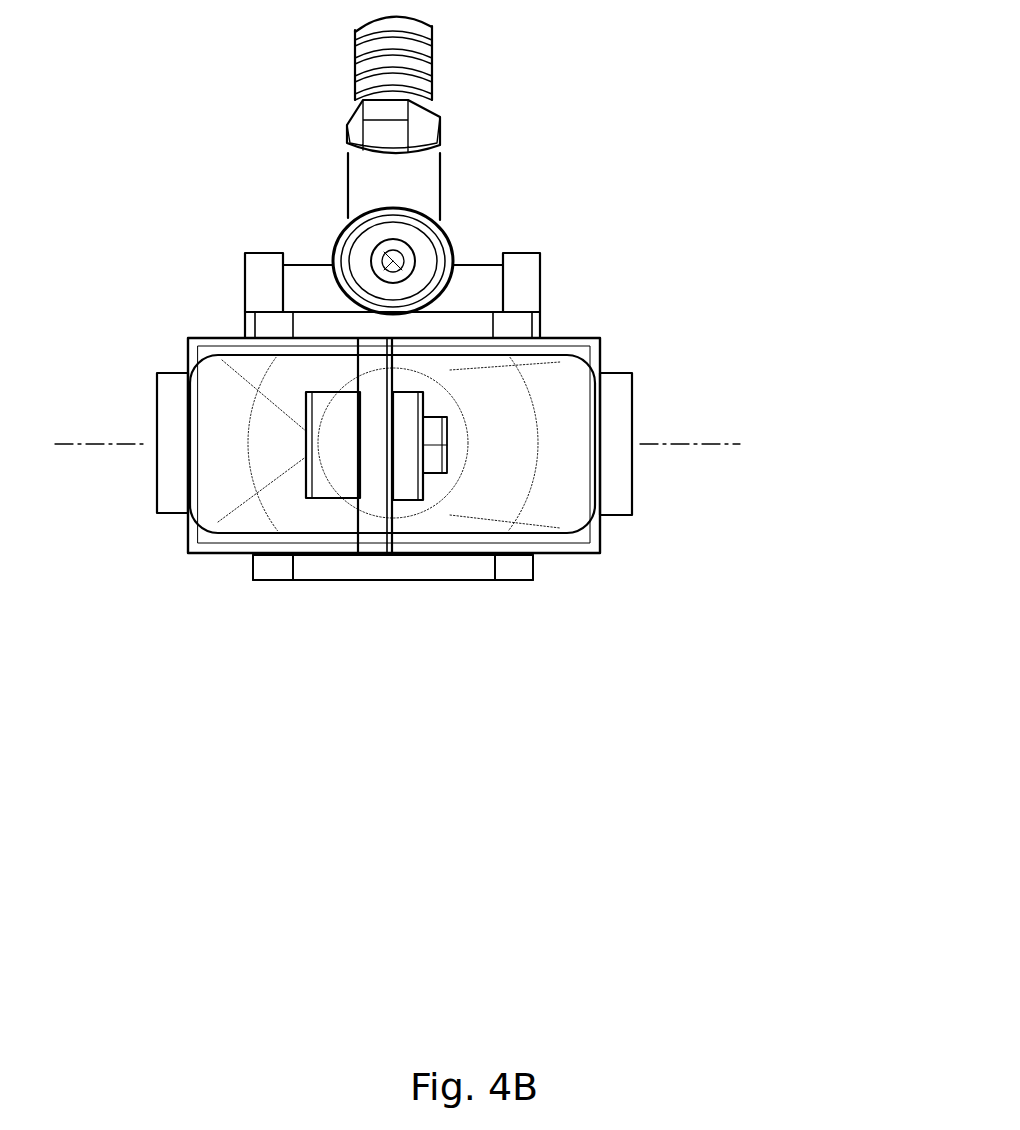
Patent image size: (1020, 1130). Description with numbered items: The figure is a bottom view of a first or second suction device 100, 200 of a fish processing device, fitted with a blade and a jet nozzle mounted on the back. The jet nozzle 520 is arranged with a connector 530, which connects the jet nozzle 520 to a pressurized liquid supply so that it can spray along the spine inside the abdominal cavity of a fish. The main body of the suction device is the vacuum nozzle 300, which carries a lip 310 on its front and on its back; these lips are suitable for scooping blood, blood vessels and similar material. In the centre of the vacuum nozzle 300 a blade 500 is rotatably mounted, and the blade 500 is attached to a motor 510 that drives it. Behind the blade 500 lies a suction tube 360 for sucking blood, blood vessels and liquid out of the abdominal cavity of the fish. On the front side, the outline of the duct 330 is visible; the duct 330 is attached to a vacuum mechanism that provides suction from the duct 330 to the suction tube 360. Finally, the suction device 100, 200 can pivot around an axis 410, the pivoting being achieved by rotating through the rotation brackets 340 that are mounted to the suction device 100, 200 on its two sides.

The first suction device 100 is at (463, 369).
The second suction device 200 is at (457, 369).
The vacuum nozzle 300 is at (205, 556).
The lip 310 is at (318, 322).
The duct 330 is at (282, 580).
The rotation brackets 340 is at (615, 502).
The suction tube 360 is at (437, 403).
The axis 410 is at (112, 444).
The blade 500 is at (372, 512).
The motor 510 is at (330, 427).
The jet nozzle 520 is at (398, 258).
The connector 530 is at (405, 24).